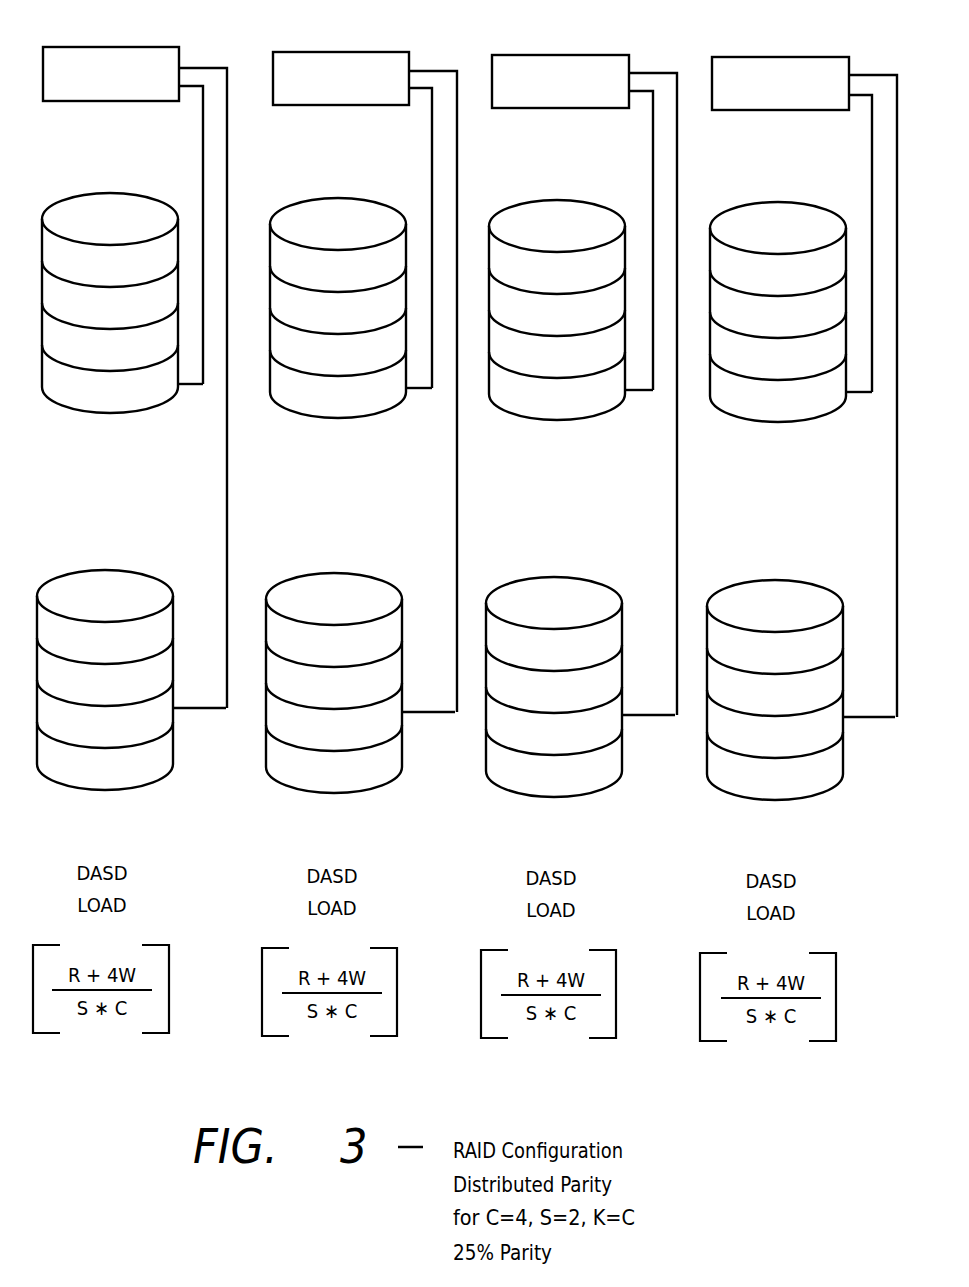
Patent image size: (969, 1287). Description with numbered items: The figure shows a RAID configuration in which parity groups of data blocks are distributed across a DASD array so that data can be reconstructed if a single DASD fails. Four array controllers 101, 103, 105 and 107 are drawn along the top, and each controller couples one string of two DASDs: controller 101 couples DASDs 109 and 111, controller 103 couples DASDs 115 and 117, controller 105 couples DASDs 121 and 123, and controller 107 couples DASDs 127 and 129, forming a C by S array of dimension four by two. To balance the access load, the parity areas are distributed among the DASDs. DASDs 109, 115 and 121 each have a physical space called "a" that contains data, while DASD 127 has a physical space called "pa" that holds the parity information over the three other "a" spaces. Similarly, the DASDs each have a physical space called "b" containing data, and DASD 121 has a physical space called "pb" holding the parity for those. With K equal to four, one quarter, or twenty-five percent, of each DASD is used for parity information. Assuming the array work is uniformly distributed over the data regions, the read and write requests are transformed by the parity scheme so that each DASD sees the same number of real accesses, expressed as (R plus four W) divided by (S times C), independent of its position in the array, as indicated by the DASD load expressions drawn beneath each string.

The array controller 101 is at (94, 47).
The array controller 103 is at (323, 52).
The array controller 105 is at (543, 55).
The array controller 107 is at (763, 57).
The DASD 109 is at (110, 193).
The DASD 111 is at (104, 570).
The DASD 115 is at (338, 198).
The DASD 117 is at (333, 573).
The DASD 121 is at (557, 200).
The DASD 123 is at (553, 577).
The DASD 127 is at (778, 202).
The DASD 129 is at (774, 580).